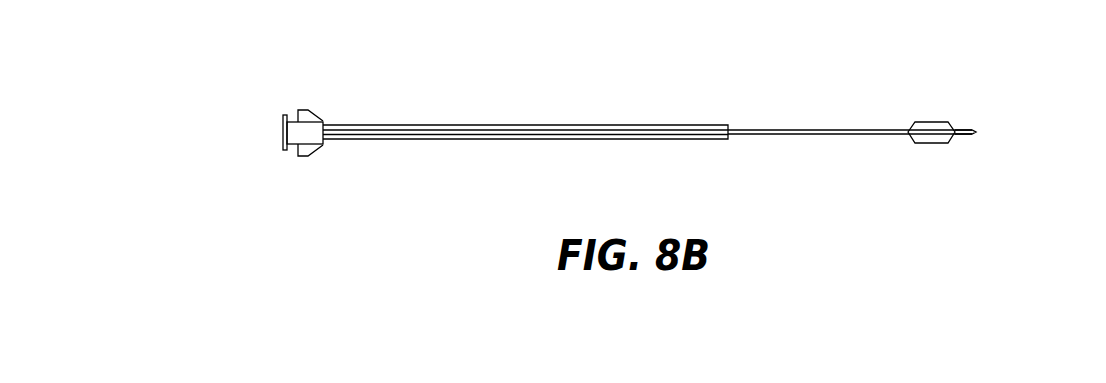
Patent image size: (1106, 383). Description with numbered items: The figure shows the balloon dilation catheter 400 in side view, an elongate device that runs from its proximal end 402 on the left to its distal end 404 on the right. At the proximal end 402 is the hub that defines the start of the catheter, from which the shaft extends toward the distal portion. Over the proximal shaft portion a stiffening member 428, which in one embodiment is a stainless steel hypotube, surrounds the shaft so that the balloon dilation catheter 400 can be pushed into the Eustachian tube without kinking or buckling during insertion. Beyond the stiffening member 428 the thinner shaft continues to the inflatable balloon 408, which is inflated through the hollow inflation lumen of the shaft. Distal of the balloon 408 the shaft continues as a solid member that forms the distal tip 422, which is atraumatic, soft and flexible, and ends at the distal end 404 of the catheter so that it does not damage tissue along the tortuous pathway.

The balloon dilation catheter 400 is at (628, 141).
The proximal end 402 is at (283, 130).
The distal end 404 is at (976, 131).
The inflatable balloon 408 is at (932, 122).
The distal tip 422 is at (962, 136).
The stiffening member 428 is at (488, 125).